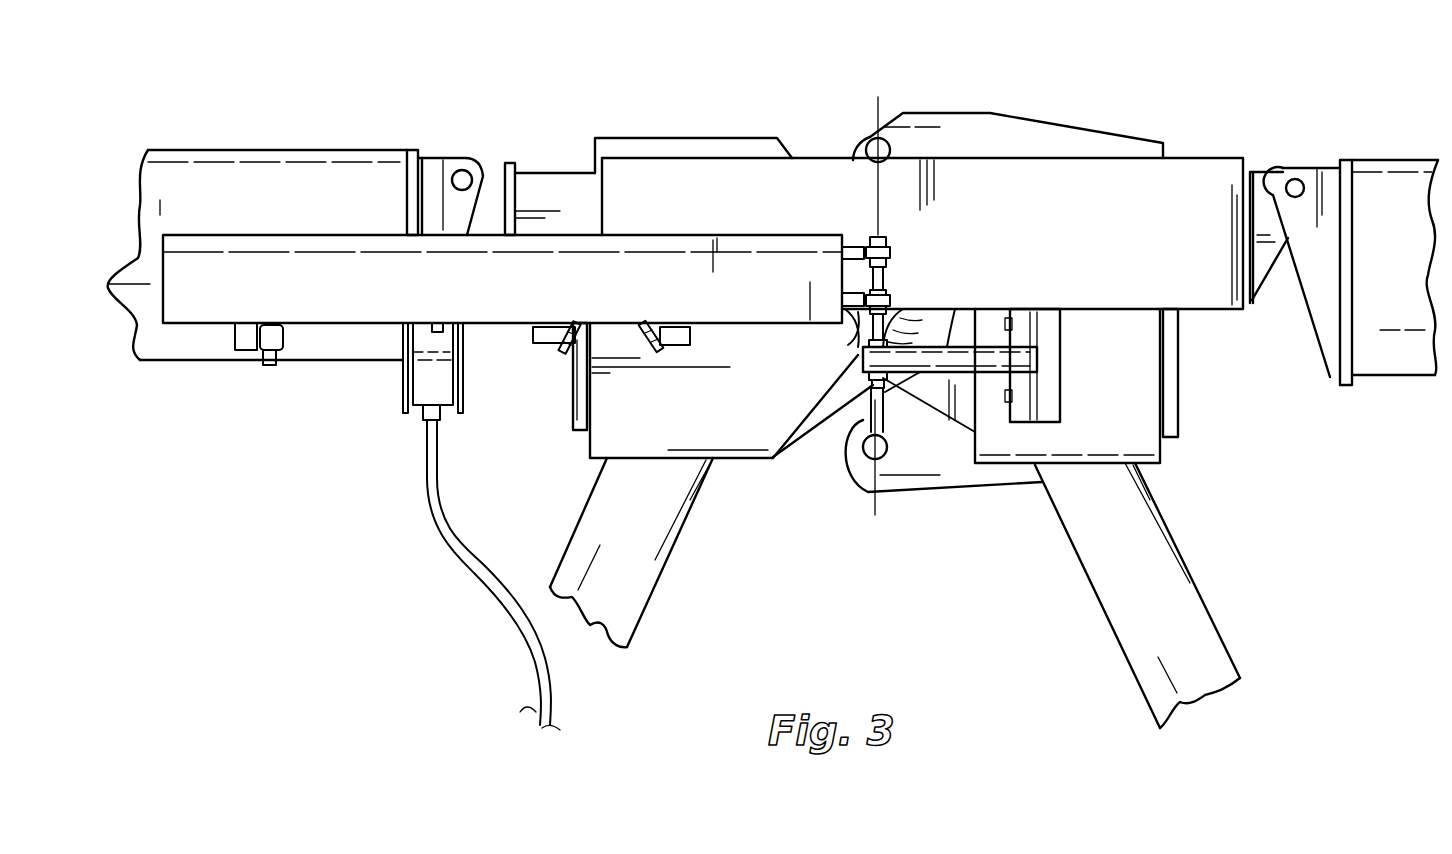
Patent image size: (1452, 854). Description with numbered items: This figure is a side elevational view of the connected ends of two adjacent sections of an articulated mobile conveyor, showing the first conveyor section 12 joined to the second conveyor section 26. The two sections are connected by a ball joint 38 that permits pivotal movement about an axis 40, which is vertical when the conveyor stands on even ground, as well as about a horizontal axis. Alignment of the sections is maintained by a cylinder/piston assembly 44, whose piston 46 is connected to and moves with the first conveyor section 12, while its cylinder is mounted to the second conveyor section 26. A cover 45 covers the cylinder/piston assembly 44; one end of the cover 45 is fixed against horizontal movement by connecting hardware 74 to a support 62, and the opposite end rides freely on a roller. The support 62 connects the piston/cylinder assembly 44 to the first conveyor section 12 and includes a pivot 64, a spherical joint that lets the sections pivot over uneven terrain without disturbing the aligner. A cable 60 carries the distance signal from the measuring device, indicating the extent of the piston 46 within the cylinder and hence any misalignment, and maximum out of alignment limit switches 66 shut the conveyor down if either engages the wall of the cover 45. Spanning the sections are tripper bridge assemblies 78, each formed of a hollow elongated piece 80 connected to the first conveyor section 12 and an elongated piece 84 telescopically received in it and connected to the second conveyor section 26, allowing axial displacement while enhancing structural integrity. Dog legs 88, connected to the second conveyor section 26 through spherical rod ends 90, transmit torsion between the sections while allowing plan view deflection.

The first conveyor section 12 is at (1150, 587).
The second conveyor section 26 is at (645, 522).
The joint 38 is at (928, 333).
The axis 40 is at (874, 112).
The cylinder/piston assembly 44 is at (625, 298).
The cover 45 is at (762, 245).
The piston 46 is at (857, 318).
The cable 60 is at (487, 583).
The support 62 is at (940, 360).
The pivot 64 is at (898, 293).
The maximum out of alignment limit switches 66 is at (662, 352).
The connecting hardware 74 is at (893, 252).
The tripper bridge assemblies 78 is at (1051, 150).
The hollow elongated piece 80 is at (670, 205).
The elongated piece 84 is at (553, 193).
The dog legs 88 is at (866, 412).
The spherical rod ends 90 is at (870, 142).